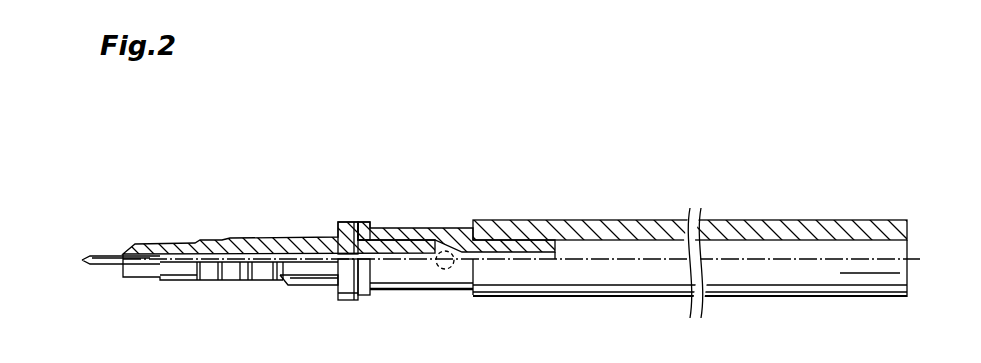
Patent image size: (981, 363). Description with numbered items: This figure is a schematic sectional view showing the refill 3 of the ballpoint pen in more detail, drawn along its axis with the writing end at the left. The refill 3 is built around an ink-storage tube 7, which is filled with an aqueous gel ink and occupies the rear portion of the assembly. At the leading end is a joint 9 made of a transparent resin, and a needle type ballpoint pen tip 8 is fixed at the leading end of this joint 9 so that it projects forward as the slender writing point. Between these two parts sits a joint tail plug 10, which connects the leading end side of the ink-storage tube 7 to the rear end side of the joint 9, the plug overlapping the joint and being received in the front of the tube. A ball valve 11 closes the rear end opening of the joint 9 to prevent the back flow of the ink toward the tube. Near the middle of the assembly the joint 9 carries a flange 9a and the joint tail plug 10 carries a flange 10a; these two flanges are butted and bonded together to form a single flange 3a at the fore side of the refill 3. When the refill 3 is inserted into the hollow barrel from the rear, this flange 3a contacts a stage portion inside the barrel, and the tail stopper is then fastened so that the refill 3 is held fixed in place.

The refill 3 is at (713, 140).
The flange 3a is at (397, 178).
The ink-storage tube 7 is at (620, 222).
The needle type ballpoint pen tip 8 is at (106, 254).
The joint 9 is at (284, 236).
The flange of the joint 9a is at (353, 222).
The joint tail plug 10 is at (437, 236).
The flange of the joint tail plug 10a is at (368, 222).
The ball valve 11 is at (445, 269).